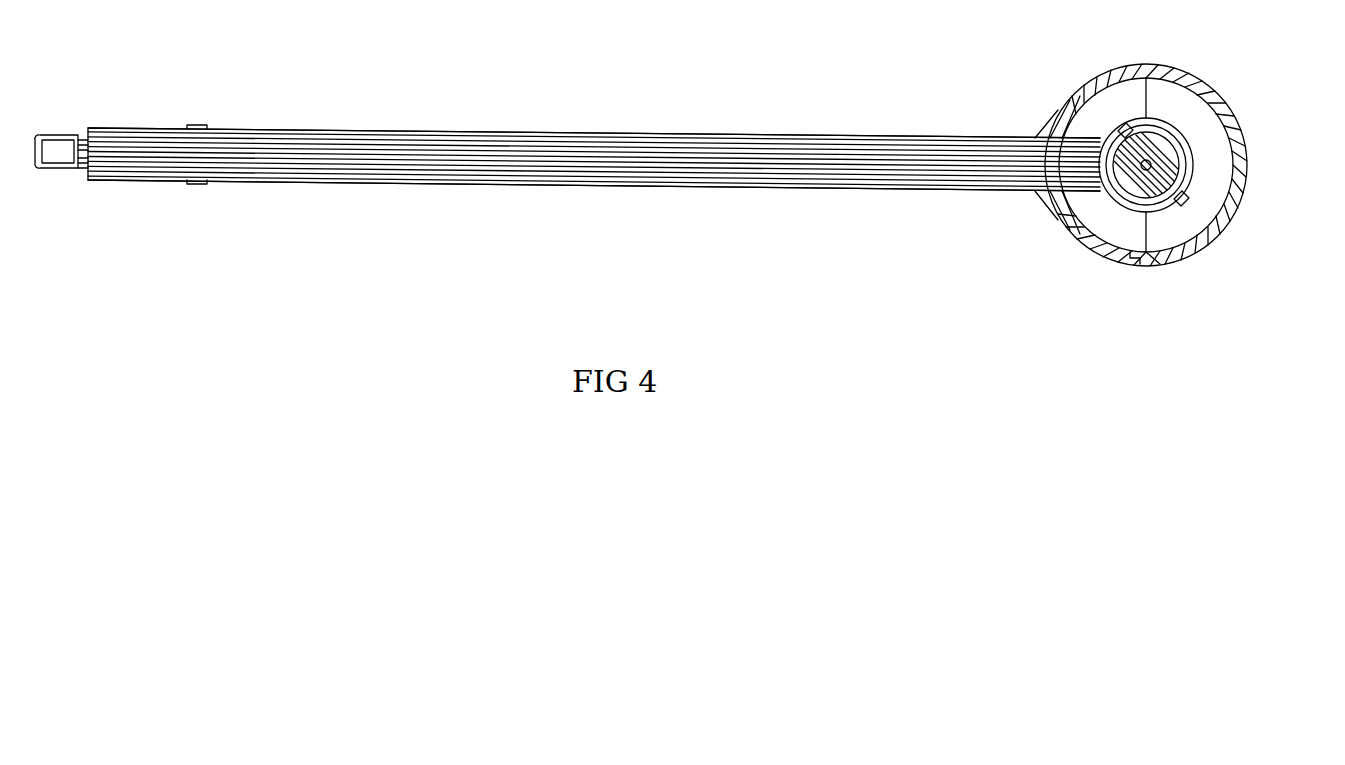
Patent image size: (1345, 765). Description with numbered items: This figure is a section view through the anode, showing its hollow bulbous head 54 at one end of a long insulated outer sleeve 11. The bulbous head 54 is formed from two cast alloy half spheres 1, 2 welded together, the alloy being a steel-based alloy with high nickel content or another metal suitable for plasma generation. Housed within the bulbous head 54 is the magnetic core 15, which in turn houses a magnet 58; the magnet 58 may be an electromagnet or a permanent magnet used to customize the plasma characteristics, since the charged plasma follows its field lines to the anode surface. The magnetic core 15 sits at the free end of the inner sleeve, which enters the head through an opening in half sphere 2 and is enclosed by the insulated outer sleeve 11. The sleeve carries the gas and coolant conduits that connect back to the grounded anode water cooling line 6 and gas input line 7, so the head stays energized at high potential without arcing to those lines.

The half sphere 1 is at (1190, 318).
The half sphere 2 is at (1113, 262).
The anode water cooling line 6 is at (1088, 190).
The gas input line 7 is at (1080, 138).
The insulated outer sleeve 11 is at (635, 134).
The magnetic core 15 is at (1188, 136).
The hollow bulbous head 54 is at (1182, 70).
The magnet 58 is at (1180, 173).